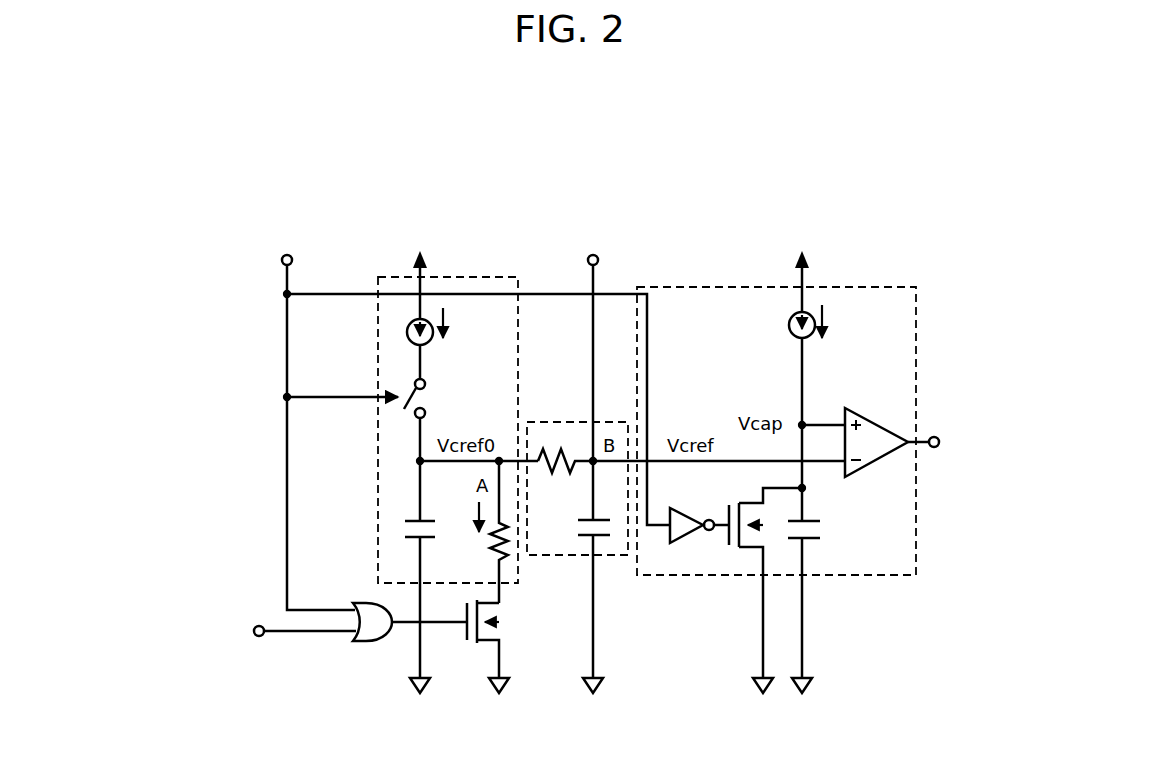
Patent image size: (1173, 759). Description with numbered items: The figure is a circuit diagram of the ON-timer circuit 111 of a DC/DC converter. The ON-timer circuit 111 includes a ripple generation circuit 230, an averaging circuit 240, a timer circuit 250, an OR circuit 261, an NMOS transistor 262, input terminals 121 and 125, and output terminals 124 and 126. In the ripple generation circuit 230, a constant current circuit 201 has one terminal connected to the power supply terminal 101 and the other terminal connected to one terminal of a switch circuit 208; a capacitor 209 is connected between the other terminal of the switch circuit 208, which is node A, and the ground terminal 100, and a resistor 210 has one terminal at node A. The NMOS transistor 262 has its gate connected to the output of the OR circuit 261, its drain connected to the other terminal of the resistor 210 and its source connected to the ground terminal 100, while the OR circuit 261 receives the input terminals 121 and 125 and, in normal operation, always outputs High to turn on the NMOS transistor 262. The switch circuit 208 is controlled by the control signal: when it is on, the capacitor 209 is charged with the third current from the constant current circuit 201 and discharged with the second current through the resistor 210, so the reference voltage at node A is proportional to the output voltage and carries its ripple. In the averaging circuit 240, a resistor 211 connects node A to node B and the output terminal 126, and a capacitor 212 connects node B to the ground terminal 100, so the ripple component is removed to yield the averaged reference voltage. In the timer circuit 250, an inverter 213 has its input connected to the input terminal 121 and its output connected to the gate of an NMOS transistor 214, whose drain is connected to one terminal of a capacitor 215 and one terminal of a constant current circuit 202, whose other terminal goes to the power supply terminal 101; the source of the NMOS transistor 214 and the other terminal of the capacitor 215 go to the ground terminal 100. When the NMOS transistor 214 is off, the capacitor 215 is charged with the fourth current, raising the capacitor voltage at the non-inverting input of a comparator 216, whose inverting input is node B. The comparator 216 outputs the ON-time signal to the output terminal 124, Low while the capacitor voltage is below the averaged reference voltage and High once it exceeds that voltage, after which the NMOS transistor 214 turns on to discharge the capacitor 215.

The ground terminal 100 is at (806, 701).
The power supply terminal 101 is at (801, 267).
The ON-timer circuit 111 is at (670, 207).
The input terminal 121 is at (332, 416).
The output terminal 124 is at (934, 437).
The input terminal 125 is at (278, 634).
The output terminal 126 is at (592, 371).
The constant current circuit 201 is at (405, 328).
The constant current circuit 202 is at (788, 324).
The switch circuit 208 is at (403, 407).
The capacitor 209 is at (408, 530).
The resistor 210 is at (490, 540).
The resistor 211 is at (557, 445).
The capacitor 212 is at (566, 548).
The inverter 213 is at (666, 548).
The NMOS transistor 214 is at (748, 548).
The capacitor 215 is at (836, 522).
The comparator 216 is at (876, 414).
The ripple generation circuit 230 is at (387, 277).
The averaging circuit 240 is at (615, 557).
The timer circuit 250 is at (882, 300).
The OR circuit 261 is at (344, 636).
The NMOS transistor 262 is at (503, 627).